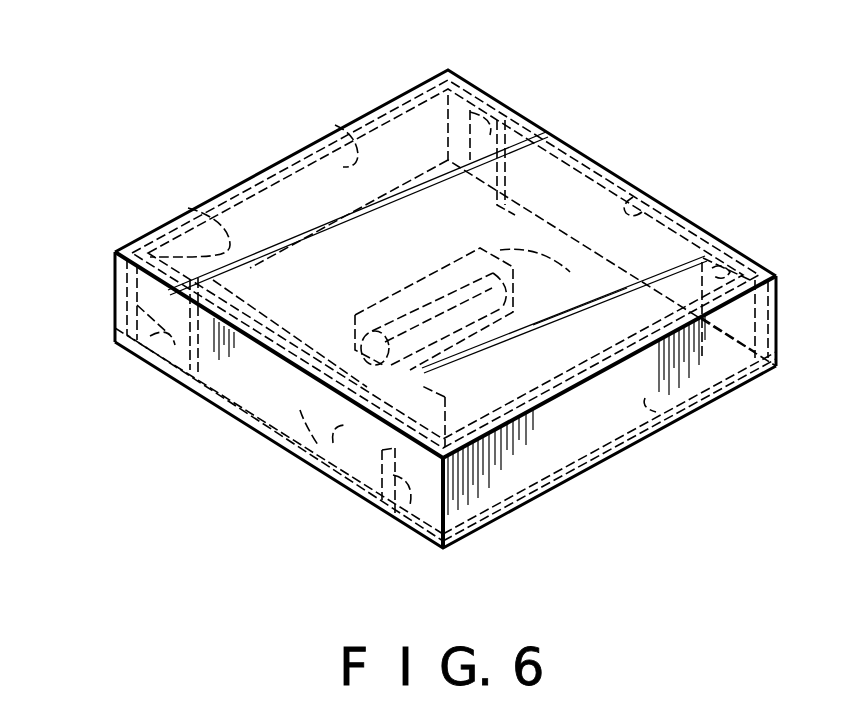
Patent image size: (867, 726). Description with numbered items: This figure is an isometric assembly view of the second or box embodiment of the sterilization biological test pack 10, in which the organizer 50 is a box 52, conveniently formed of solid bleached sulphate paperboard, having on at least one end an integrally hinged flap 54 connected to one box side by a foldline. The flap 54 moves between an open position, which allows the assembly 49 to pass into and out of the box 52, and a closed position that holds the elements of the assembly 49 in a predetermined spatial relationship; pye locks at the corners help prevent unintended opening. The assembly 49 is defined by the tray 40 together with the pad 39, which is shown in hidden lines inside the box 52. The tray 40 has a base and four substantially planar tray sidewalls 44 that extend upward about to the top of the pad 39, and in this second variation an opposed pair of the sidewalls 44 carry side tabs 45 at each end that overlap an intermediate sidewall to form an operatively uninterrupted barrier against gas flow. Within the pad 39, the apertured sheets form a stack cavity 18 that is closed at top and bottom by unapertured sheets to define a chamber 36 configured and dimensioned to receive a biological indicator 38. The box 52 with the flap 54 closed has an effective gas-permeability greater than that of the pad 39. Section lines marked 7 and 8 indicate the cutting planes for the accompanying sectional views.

The sterilization biological test pack 10 is at (335, 78).
The pad 39 is at (445, 247).
The stack cavity 18 is at (437, 252).
The organizer 50 is at (108, 306).
The box 52 is at (775, 305).
The tray 40 is at (549, 443).
The assembly 49 is at (700, 395).
The side tabs 45 is at (497, 95).
The tray sidewalls 44 is at (335, 125).
The flap 54 is at (187, 207).
The chamber 36 is at (418, 278).
The biological indicator 38 is at (453, 273).
The section line 7- 7 is at (710, 103).
The section line 8- 8 is at (195, 135).